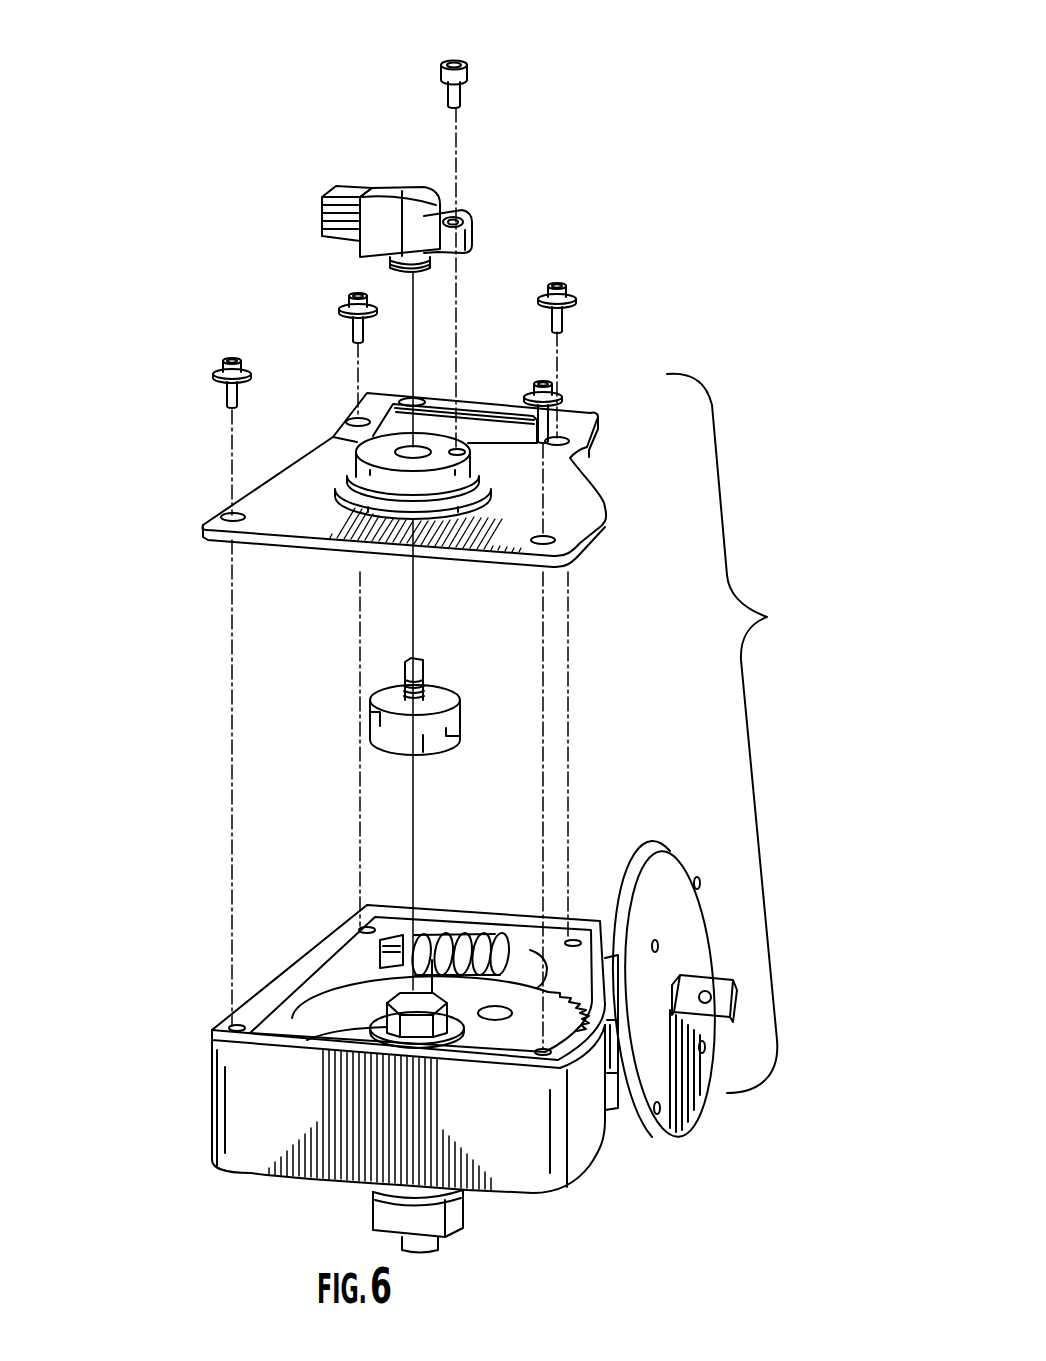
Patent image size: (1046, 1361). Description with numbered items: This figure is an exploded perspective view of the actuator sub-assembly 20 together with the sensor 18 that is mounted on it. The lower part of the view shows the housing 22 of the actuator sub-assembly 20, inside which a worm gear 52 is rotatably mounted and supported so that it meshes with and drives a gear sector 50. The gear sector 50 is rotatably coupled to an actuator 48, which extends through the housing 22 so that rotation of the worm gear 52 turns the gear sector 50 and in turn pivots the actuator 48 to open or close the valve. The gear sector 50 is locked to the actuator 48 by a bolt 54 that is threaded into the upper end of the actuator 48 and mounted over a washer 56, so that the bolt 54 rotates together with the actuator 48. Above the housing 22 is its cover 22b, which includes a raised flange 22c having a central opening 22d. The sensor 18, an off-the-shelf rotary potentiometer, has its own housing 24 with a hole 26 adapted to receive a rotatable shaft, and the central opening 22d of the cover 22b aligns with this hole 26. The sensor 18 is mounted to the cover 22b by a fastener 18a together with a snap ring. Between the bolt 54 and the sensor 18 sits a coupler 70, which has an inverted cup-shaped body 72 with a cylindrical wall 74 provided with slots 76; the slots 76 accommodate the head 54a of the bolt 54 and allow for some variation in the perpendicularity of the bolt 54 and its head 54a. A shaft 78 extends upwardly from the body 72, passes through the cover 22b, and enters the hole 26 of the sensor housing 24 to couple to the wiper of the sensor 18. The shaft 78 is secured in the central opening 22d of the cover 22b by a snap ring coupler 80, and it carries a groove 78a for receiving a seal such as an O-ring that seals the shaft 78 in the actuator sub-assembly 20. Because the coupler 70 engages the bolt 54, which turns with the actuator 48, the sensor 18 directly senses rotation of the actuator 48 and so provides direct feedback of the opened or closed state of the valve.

The sensor 18 is at (410, 186).
The fastener 18a is at (472, 57).
The housing 24 is at (440, 203).
The hole 26 is at (397, 278).
The snap ring coupler 80 is at (431, 384).
The cover 22b is at (582, 418).
The raised flange 22c is at (333, 438).
The central opening 22d is at (393, 453).
The actuator sub-assembly 20 is at (732, 733).
The coupler 70 is at (472, 703).
The inverted cup-shaped body 72 is at (388, 729).
The cylindrical wall 74 is at (423, 753).
The slots 76 is at (370, 725).
The shaft 78 is at (408, 667).
The groove 78a is at (428, 697).
The gear sector 50 is at (540, 1000).
The worm gear 52 is at (499, 927).
The bolt 54 is at (388, 982).
The head 54a is at (433, 993).
The washer 56 is at (370, 1010).
The housing 22 is at (619, 1146).
The actuator 48 is at (470, 1213).